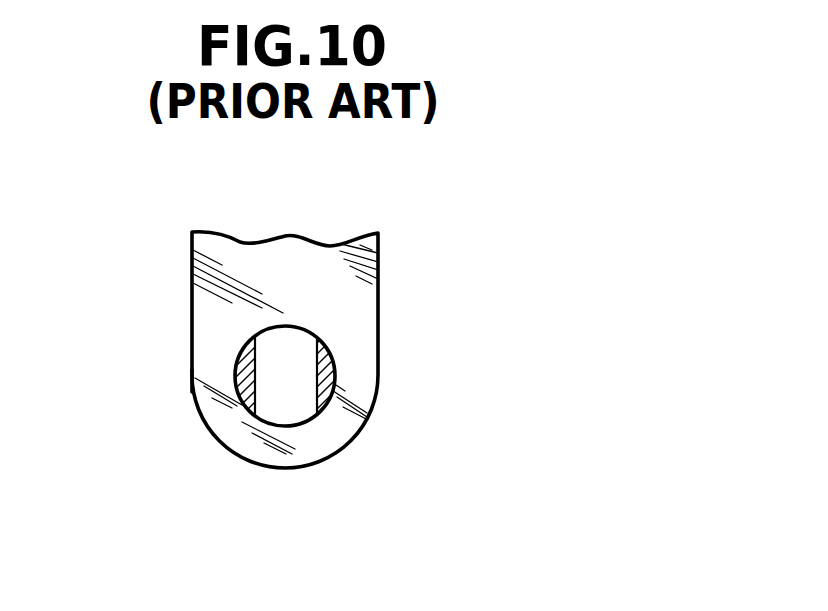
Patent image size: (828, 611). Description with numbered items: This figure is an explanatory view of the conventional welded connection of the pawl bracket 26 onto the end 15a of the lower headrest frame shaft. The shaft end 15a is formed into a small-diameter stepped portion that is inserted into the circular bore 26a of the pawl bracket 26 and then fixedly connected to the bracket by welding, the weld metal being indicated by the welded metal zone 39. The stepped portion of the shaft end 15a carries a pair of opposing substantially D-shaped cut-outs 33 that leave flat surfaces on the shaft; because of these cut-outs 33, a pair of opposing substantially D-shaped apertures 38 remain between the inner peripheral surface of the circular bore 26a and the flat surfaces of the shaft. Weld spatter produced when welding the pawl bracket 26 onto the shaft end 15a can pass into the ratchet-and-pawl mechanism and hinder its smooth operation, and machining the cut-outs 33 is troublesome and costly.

The pawl bracket 26 is at (363, 383).
The circular bore 26a is at (196, 380).
The cut-outs 33 is at (249, 347).
The D-shaped apertures 38 is at (257, 403).
The welded metal zone 39 is at (302, 333).
The shaft end 15a is at (287, 398).